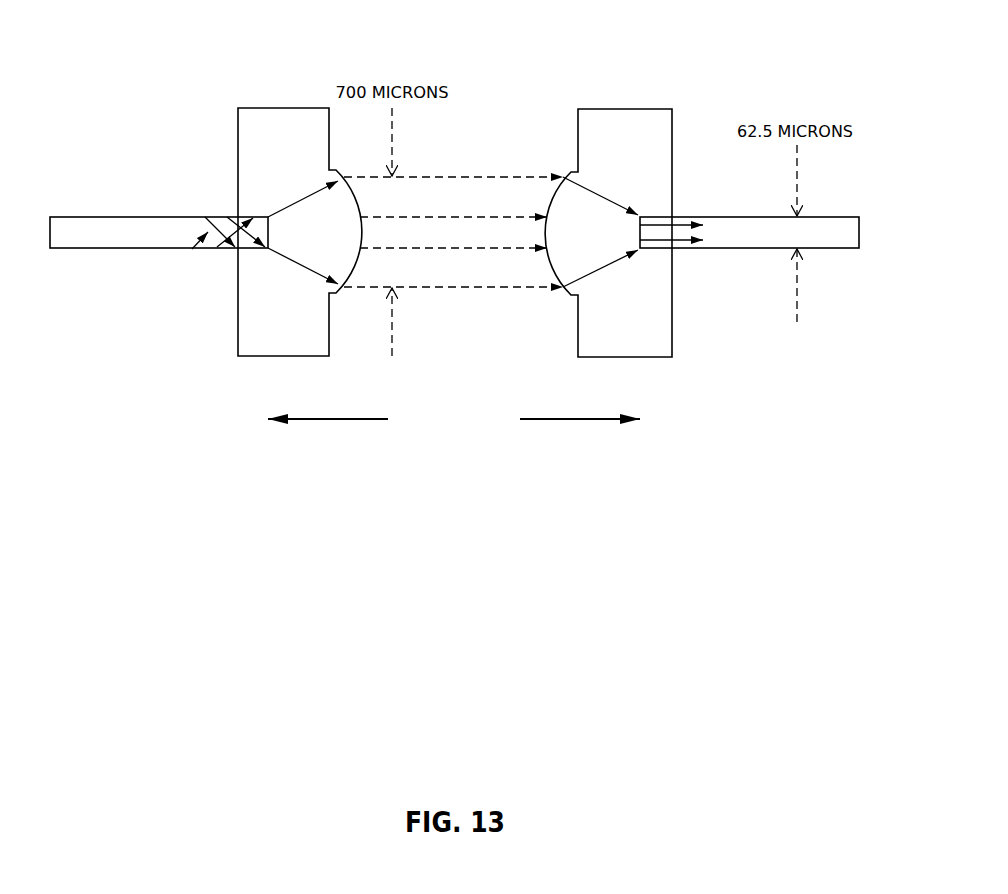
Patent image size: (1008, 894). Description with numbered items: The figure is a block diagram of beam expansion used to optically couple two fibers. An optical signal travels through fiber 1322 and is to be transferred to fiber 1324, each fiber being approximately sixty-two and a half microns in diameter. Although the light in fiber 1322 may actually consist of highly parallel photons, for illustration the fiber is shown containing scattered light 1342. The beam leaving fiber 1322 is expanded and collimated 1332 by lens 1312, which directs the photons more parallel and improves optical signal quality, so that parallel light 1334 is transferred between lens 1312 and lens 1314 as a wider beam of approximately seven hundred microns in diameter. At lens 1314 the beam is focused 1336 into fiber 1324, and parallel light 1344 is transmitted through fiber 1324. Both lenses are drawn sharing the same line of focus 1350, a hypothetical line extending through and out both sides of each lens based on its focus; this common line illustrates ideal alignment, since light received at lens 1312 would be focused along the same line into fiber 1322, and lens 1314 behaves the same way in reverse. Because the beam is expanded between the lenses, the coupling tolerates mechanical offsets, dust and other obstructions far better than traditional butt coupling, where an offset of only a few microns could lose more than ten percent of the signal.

The lens 1312 is at (300, 232).
The lens 1314 is at (608, 233).
The fiber 1322 is at (159, 232).
The fiber 1324 is at (749, 232).
The expand and collimate 1332 is at (280, 183).
The parallel light 1334 is at (517, 172).
The focus 1336 is at (627, 182).
The scattered light 1342 is at (207, 263).
The parallel light 1344 is at (703, 263).
The line of focus 1350 is at (454, 418).